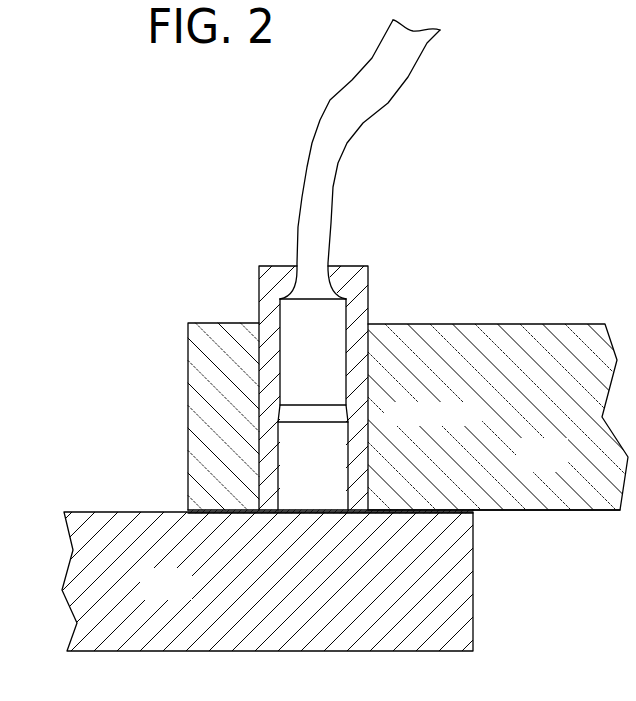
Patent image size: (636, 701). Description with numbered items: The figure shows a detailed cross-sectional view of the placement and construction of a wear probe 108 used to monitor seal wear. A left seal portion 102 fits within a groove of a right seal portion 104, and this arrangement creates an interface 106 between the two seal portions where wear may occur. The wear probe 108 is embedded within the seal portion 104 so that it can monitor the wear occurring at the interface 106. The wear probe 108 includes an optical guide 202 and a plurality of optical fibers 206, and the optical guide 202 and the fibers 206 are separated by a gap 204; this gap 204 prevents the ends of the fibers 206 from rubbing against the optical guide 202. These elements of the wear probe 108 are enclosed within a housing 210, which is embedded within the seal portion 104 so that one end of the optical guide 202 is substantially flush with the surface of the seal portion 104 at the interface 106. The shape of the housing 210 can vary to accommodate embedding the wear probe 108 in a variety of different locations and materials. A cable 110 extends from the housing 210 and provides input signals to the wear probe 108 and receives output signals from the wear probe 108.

The left seal portion 102 is at (186, 596).
The right seal portion 104 is at (560, 468).
The interface 106 is at (311, 516).
The wear probe 108 is at (398, 414).
The cable 110 is at (313, 145).
The optical guide 202 is at (298, 466).
The gap 204 is at (292, 414).
The optical fibers 206 is at (300, 357).
The housing 210 is at (368, 279).